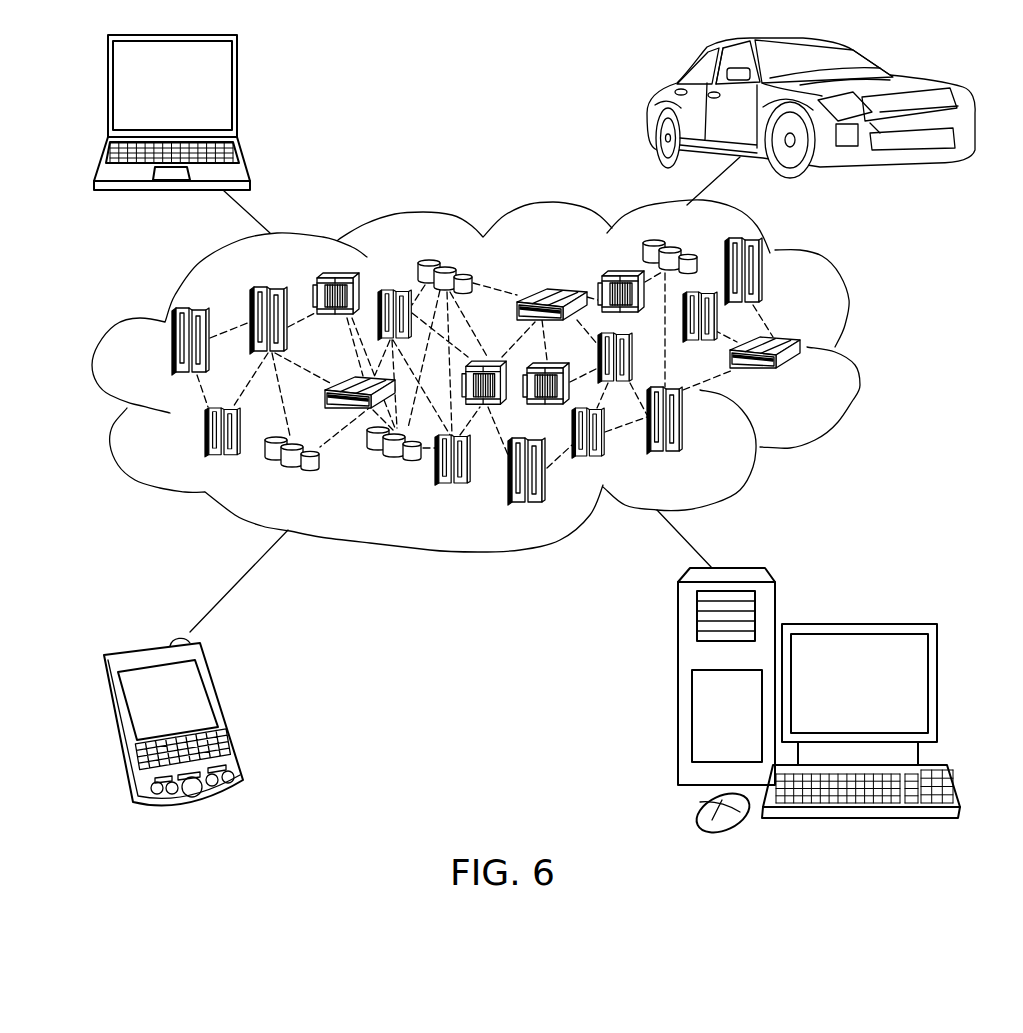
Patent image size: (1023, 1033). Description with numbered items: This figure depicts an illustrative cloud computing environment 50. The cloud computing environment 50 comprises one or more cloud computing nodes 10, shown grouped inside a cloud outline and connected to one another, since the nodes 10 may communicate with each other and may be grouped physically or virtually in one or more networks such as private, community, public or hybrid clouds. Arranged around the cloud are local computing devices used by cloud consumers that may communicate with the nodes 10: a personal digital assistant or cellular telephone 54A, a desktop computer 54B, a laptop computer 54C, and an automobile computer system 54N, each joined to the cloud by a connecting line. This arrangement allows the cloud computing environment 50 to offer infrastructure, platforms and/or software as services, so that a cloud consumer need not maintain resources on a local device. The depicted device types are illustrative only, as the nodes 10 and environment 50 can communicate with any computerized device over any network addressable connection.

The cloud computing node 10 is at (806, 381).
The cloud computing environment 50 is at (856, 352).
The personal digital assistant or cellular telephone 54A is at (228, 710).
The desktop computer 54B is at (857, 624).
The laptop computer 54C is at (237, 93).
The automobile computer system 54N is at (650, 109).